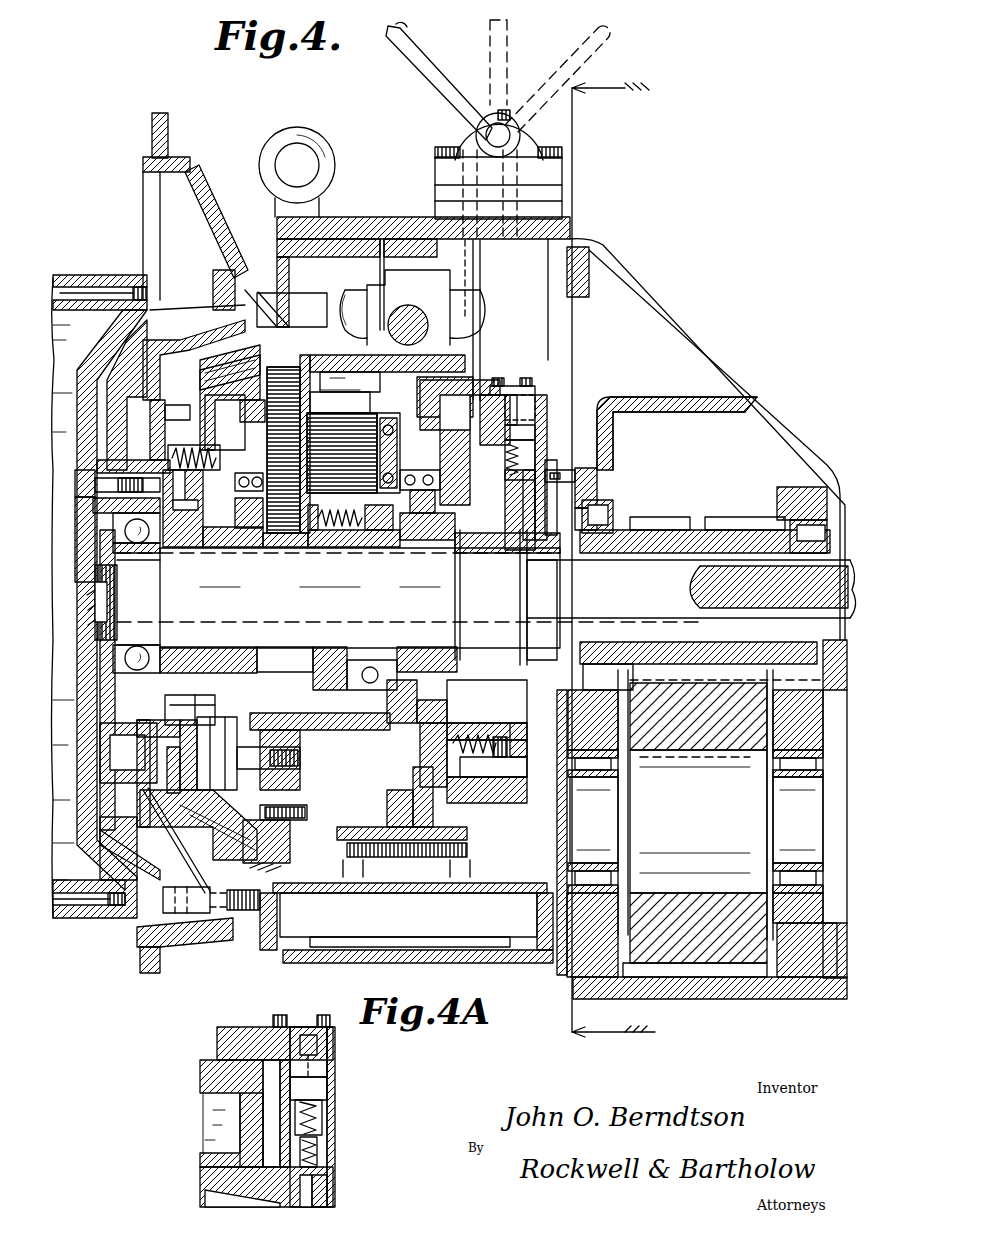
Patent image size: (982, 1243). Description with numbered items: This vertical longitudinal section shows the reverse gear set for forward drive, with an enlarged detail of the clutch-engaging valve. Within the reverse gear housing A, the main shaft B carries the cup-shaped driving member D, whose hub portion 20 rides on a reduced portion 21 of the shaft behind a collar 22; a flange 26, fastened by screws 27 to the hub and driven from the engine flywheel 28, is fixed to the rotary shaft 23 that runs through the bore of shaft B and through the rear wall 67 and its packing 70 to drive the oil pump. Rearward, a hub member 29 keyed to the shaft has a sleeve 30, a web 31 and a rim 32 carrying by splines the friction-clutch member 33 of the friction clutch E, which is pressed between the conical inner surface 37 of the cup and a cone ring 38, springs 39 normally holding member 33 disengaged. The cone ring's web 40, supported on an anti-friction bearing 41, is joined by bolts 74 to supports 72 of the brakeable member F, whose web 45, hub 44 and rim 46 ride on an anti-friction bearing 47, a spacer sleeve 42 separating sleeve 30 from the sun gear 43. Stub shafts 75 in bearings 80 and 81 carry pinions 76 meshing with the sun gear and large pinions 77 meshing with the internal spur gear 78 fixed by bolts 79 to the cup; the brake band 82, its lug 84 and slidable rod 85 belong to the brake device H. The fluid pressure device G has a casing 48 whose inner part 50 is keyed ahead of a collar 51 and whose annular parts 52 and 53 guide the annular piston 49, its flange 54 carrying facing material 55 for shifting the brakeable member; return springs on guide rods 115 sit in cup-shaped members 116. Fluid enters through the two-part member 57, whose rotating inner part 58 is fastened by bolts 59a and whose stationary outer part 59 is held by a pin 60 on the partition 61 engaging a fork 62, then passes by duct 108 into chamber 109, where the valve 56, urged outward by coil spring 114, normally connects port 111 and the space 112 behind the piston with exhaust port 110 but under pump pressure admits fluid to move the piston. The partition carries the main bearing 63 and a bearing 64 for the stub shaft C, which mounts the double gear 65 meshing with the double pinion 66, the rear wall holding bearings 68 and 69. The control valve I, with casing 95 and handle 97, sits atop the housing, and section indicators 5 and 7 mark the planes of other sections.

In FIG. 4, the section line 5- 5 is at (613, 560).
In FIG. 4, the section line 7 is at (286, 285).
In FIG. 4, the hub portion 20 is at (160, 540).
In FIG. 4, the reduced portion 21 is at (112, 594).
In FIG. 4, the collar 22 is at (95, 548).
In FIG. 4, the rotary shaft 23 is at (700, 600).
In FIG. 4, the flange 26 is at (80, 606).
In FIG. 4, the screws 27 is at (75, 484).
In FIG. 4, the engine flywheel 28 is at (92, 915).
In FIG. 4, the hub member 29 is at (199, 556).
In FIG. 4, the sleeve 30 is at (240, 542).
In FIG. 4, the outstanding web 31 is at (197, 540).
In FIG. 4, the rim 32 is at (208, 753).
In FIG. 4, the friction-clutch member 33 is at (210, 815).
In FIG. 4, the conical inner surface 37 is at (225, 840).
In FIG. 4, the cone ring 38 is at (230, 397).
In FIG. 4, the springs 39 is at (218, 453).
In FIG. 4, the web 40 is at (285, 725).
In FIG. 4, the anti-friction bearing 41 is at (240, 680).
In FIG. 4, the spacer sleeve 42 is at (285, 548).
In FIG. 4, the sun gear 43 is at (333, 548).
In FIG. 4, the central portion 44 is at (400, 530).
In FIG. 4, the web 45 is at (395, 370).
In FIG. 4, the rim 46 is at (435, 362).
In FIG. 4, the anti-friction bearing 47 is at (448, 605).
In FIG. 4, the piston-containing casing 48 is at (540, 420).
In FIG. 4A, the piston-containing casing 48 is at (335, 1062).
In FIG. 4, the annular piston 49 is at (460, 442).
In FIG. 4A, the annular piston 49 is at (218, 1085).
In FIG. 4, the inner part 50 is at (478, 548).
In FIG. 4, the collar 51 is at (522, 598).
In FIG. 4, the annular part 52 is at (525, 432).
In FIG. 4A, the annular part 52 is at (215, 1182).
In FIG. 4, the annular part 53 is at (498, 398).
In FIG. 4A, the annular part 53 is at (222, 1055).
In FIG. 4, the flange 54 is at (433, 790).
In FIG. 4, the facing material 55 is at (398, 795).
In FIG. 4, the fluid-control valve 56 is at (520, 456).
In FIG. 4A, the fluid-control valve 56 is at (328, 1112).
In FIG. 4, the two-part annular member 57 is at (540, 545).
In FIG. 4, the inner part 58 is at (558, 540).
In FIG. 4, the outer part 59 is at (561, 698).
In FIG. 4, the bolts 59a is at (540, 647).
In FIG. 4, the pin 60 is at (583, 470).
In FIG. 4, the partition 61 is at (606, 428).
In FIG. 4, the fork 62 is at (556, 468).
In FIG. 4, the main bearing 63 is at (615, 508).
In FIG. 4, the bearing 64 is at (610, 775).
In FIG. 4, the double gear 65 is at (718, 970).
In FIG. 4, the double pinion 66 is at (690, 517).
In FIG. 4, the rear wall 67 is at (838, 493).
In FIG. 4, the bearing 68 is at (790, 511).
In FIG. 4, the bearing 69 is at (810, 803).
In FIG. 4, the packing 70 is at (810, 600).
In FIG. 4, the supports 72 is at (320, 812).
In FIG. 4, the bolts 74 is at (300, 770).
In FIG. 4, the stub shafts 75 is at (310, 440).
In FIG. 4, the pinion 76 is at (372, 457).
In FIG. 4, the large pinion 77 is at (300, 382).
In FIG. 4, the internal spur gear 78 is at (300, 845).
In FIG. 4, the bolts 79 is at (215, 312).
In FIG. 4, the anti-friction bearings 80 is at (262, 416).
In FIG. 4, the anti-friction bearings 81 is at (412, 445).
In FIG. 4, the brake band 82 is at (470, 346).
In FIG. 4, the end lug 84 is at (430, 282).
In FIG. 4, the slidable rod 85 is at (408, 306).
In FIG. 4, the casing 95 is at (445, 178).
In FIG. 4, the external handle 97 is at (438, 78).
In FIG. 4, the duct 108 is at (510, 545).
In FIG. 4A, the duct 108 is at (320, 1195).
In FIG. 4, the chamber 109 is at (513, 407).
In FIG. 4A, the chamber 109 is at (328, 1043).
In FIG. 4A, the port 110 is at (328, 1085).
In FIG. 4A, the port 111 is at (276, 1085).
In FIG. 4A, the chamber 112 is at (268, 1130).
In FIG. 4A, the coil spring 114 is at (328, 1152).
In FIG. 4, the guide rod 115 is at (450, 745).
In FIG. 4, the cup-shaped member 116 is at (495, 800).
In FIG. 4, the reverse gear housing A is at (175, 313).
In FIG. 4, the main shaft B is at (300, 630).
In FIG. 4, the stub shaft C is at (598, 840).
In FIG. 4, the driving member D is at (187, 362).
In FIG. 4, the friction clutch E is at (173, 420).
In FIG. 4, the brakeable member F is at (372, 407).
In FIG. 4, the fluid pressure device G is at (468, 398).
In FIG. 4A, the fluid pressure device G is at (228, 1027).
In FIG. 4, the fluid-pressure device H is at (360, 290).
In FIG. 4, the control valve I is at (446, 130).